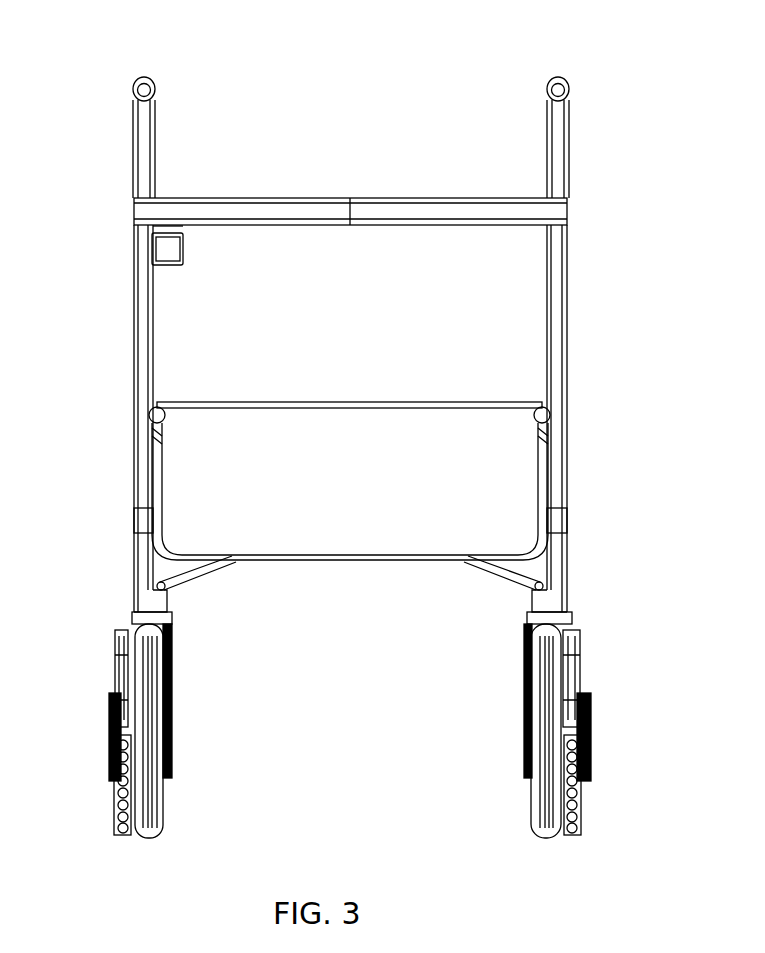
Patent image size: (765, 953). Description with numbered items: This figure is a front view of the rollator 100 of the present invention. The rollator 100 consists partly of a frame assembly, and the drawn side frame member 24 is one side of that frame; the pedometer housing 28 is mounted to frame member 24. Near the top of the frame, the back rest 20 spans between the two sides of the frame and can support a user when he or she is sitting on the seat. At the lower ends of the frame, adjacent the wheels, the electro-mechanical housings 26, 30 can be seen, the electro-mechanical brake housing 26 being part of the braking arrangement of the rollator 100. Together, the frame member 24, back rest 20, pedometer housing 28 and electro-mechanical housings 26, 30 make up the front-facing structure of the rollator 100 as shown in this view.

The rollator 100 is at (67, 117).
The back rest 20 is at (410, 207).
The frame member 24 is at (137, 365).
The electro-mechanical brake housing 26 is at (592, 637).
The pedometer housing 28 is at (183, 252).
The electro-mechanical housing 30 is at (115, 637).